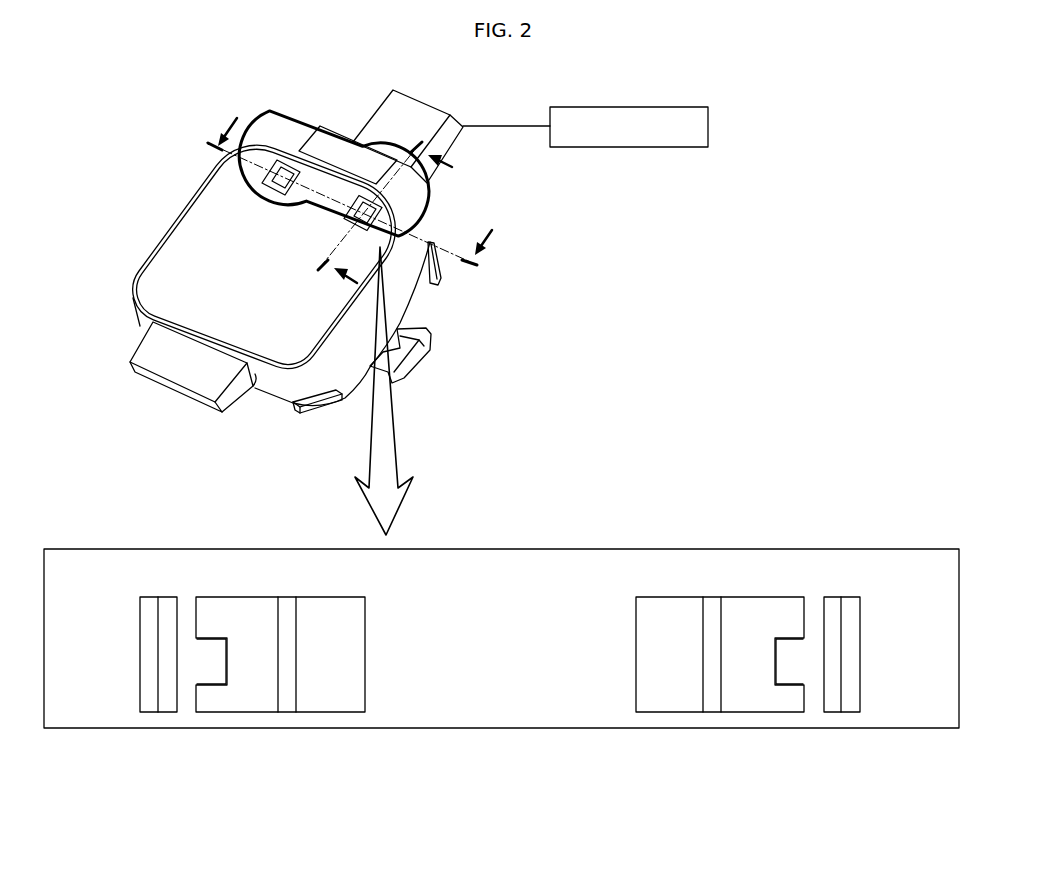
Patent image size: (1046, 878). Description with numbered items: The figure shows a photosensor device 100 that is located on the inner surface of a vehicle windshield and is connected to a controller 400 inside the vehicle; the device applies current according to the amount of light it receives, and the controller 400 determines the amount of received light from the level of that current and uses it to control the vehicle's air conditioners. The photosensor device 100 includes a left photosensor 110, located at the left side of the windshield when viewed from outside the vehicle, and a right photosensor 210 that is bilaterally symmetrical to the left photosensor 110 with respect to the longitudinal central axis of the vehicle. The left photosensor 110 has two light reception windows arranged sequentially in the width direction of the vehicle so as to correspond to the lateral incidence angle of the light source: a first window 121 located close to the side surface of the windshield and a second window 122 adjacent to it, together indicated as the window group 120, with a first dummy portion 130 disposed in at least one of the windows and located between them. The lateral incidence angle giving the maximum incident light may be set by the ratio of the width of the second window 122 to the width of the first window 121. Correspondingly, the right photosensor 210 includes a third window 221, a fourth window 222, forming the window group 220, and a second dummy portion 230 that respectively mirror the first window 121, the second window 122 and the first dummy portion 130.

The photosensor device 100 is at (466, 283).
The left photosensor 110 is at (287, 167).
The first electrode assembly 120 is at (748, 714).
The first window 121 is at (832, 700).
The second window 122 is at (757, 700).
The first dummy portion 130 is at (783, 648).
The right photosensor 210 is at (418, 200).
The second electrode assembly 220 is at (252, 714).
The third window 221 is at (165, 702).
The fourth window 222 is at (238, 700).
The second dummy portion 230 is at (205, 648).
The controller 400 is at (638, 147).